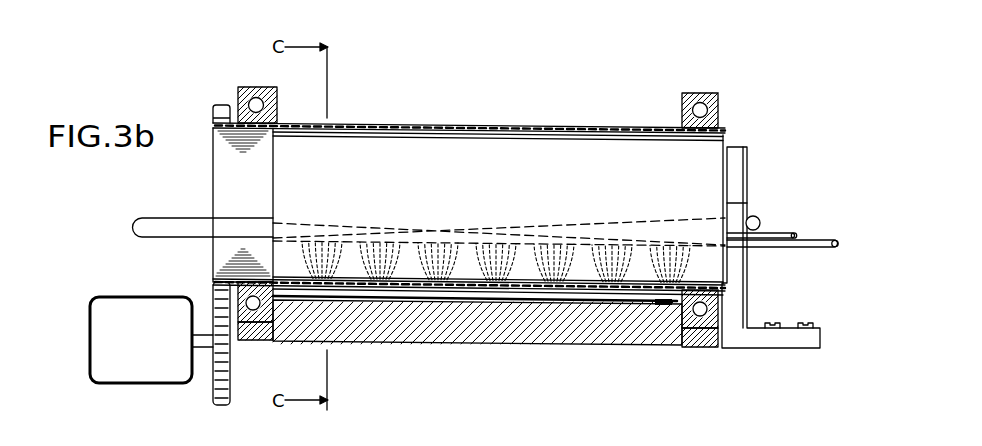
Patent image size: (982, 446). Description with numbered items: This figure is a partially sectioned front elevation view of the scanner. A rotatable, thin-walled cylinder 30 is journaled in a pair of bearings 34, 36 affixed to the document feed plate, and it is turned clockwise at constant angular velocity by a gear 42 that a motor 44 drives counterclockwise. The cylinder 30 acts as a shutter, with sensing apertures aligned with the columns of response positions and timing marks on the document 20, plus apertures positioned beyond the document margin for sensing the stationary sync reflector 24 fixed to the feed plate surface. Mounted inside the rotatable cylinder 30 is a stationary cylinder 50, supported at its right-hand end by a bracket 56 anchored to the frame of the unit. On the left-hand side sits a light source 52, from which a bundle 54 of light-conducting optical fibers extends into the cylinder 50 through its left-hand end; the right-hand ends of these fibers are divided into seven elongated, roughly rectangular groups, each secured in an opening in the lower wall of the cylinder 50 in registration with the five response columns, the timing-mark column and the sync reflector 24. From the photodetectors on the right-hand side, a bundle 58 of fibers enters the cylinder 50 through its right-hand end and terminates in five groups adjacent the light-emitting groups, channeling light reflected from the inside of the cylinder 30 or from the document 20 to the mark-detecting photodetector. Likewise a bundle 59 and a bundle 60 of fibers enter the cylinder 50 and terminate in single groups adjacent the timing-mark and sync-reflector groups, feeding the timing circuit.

The document 20 is at (507, 298).
The stationary sync reflector 24 is at (673, 300).
The rotatable thin-walled cylinder 30 is at (392, 124).
The bearing 34 is at (240, 87).
The bearing 36 is at (690, 93).
The gear 42 is at (212, 390).
The motor 44 is at (90, 352).
The stationary cylinder 50 is at (330, 185).
The light source 52 is at (212, 287).
The bundle of optical fibers 54 is at (170, 217).
The bracket 56 is at (745, 147).
The bundle of optical fibers 58 is at (757, 218).
The bundle of optical fibers 59 is at (795, 232).
The bundle of optical fibers 60 is at (837, 240).